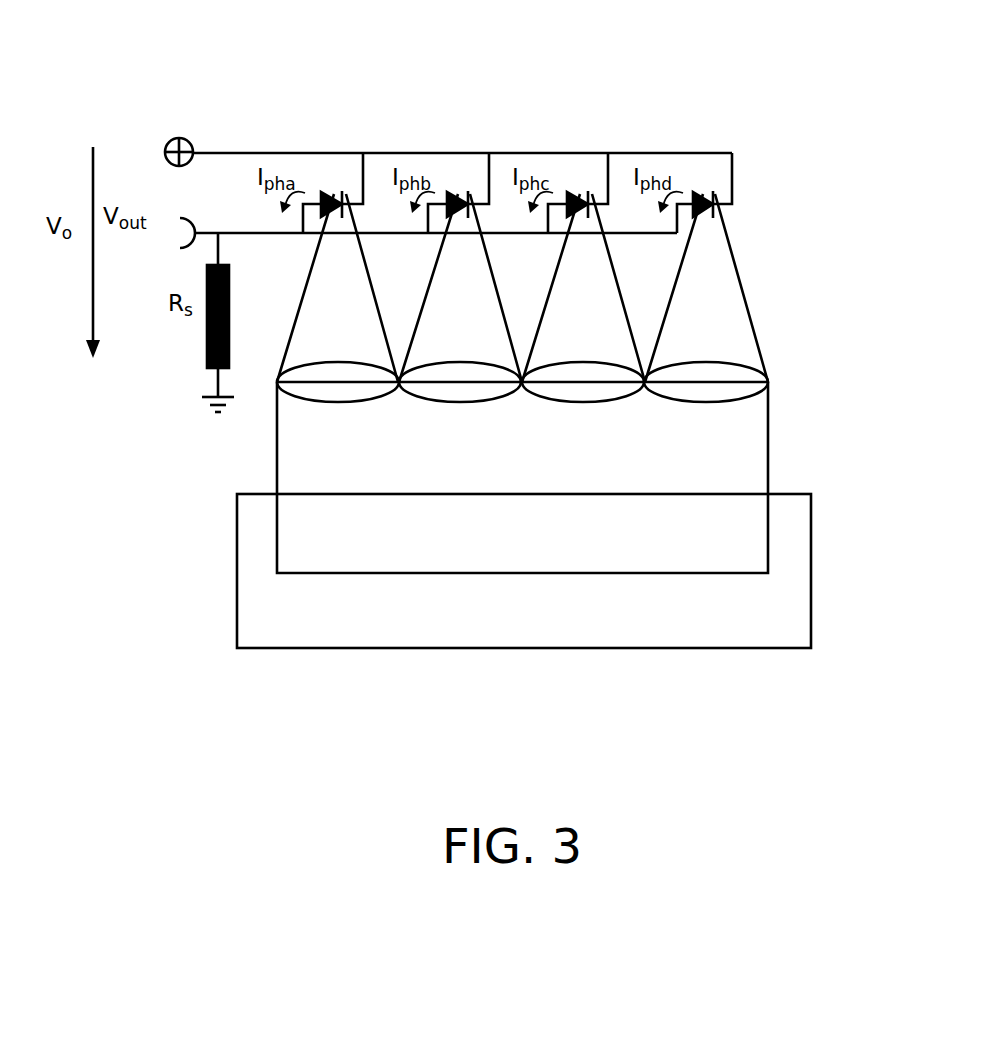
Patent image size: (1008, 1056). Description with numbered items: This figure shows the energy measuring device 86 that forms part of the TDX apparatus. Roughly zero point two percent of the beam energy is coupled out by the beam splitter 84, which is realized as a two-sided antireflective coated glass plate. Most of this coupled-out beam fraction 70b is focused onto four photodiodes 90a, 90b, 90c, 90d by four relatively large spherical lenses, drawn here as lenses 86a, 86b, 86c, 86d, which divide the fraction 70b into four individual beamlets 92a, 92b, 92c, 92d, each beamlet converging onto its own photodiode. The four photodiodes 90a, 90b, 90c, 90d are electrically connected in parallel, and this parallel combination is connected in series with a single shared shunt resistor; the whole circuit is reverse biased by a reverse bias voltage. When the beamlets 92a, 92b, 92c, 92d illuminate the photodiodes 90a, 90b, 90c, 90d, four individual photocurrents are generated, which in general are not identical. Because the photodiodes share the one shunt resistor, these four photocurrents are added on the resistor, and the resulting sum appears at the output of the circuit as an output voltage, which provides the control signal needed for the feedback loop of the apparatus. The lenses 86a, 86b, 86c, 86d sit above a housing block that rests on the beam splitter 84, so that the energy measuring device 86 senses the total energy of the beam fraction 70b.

The photodiode 90a is at (325, 198).
The photodiode 90b is at (450, 198).
The photodiode 90c is at (570, 197).
The photodiode 90d is at (700, 197).
The individual beamlet 92a is at (335, 225).
The individual beamlet 92b is at (460, 225).
The individual beamlet 92c is at (578, 225).
The individual beamlet 92d is at (703, 225).
The lens 86a is at (355, 405).
The lens 86b is at (460, 407).
The lens 86c is at (585, 405).
The lens 86d is at (708, 405).
The energy measuring device 86 is at (810, 247).
The beam fraction 70b is at (740, 462).
The beam splitter 84 is at (812, 610).